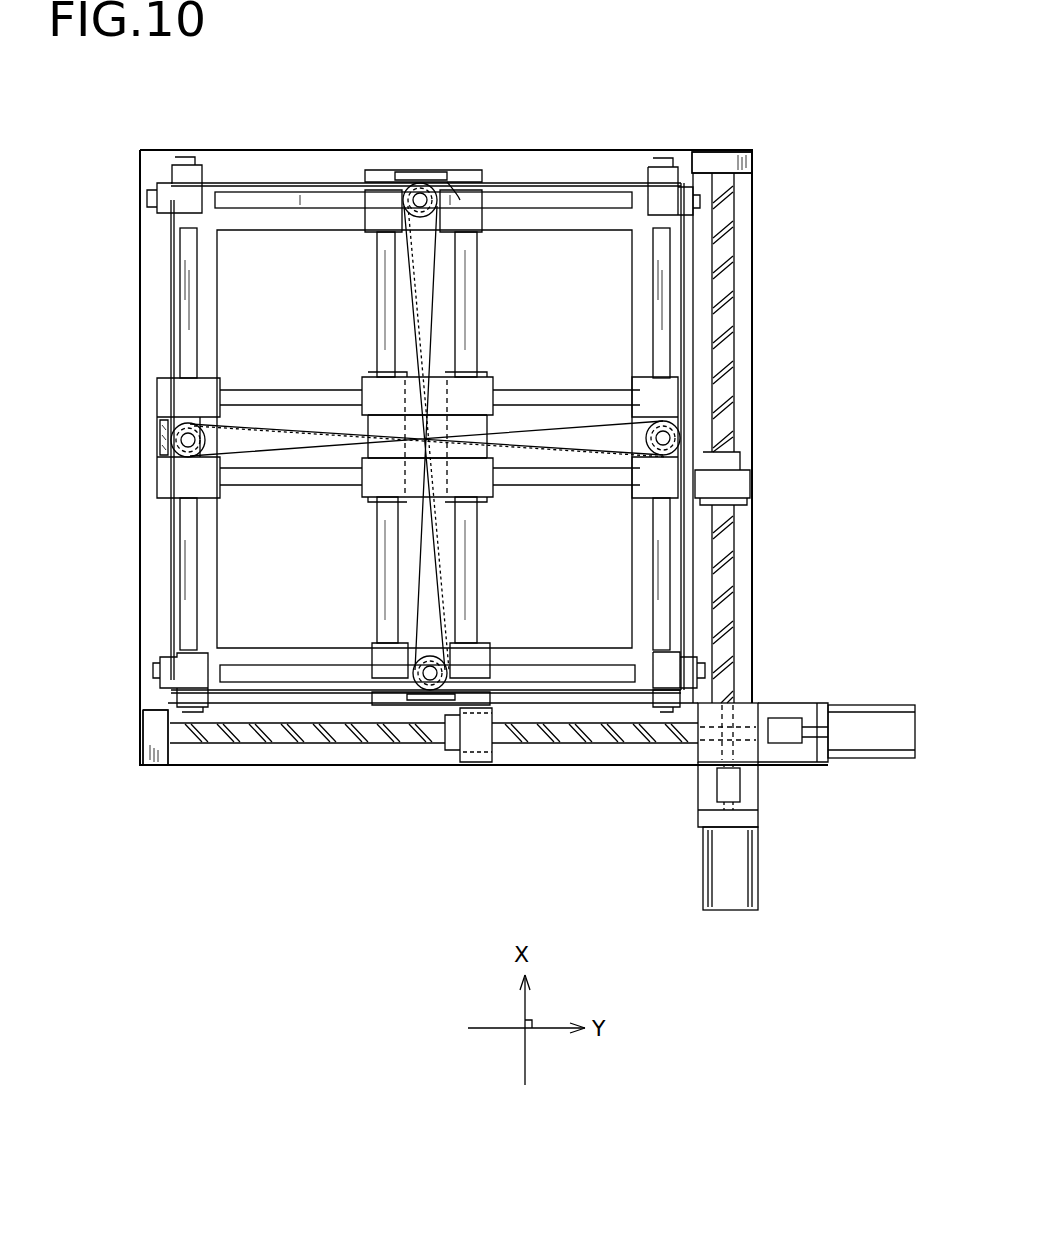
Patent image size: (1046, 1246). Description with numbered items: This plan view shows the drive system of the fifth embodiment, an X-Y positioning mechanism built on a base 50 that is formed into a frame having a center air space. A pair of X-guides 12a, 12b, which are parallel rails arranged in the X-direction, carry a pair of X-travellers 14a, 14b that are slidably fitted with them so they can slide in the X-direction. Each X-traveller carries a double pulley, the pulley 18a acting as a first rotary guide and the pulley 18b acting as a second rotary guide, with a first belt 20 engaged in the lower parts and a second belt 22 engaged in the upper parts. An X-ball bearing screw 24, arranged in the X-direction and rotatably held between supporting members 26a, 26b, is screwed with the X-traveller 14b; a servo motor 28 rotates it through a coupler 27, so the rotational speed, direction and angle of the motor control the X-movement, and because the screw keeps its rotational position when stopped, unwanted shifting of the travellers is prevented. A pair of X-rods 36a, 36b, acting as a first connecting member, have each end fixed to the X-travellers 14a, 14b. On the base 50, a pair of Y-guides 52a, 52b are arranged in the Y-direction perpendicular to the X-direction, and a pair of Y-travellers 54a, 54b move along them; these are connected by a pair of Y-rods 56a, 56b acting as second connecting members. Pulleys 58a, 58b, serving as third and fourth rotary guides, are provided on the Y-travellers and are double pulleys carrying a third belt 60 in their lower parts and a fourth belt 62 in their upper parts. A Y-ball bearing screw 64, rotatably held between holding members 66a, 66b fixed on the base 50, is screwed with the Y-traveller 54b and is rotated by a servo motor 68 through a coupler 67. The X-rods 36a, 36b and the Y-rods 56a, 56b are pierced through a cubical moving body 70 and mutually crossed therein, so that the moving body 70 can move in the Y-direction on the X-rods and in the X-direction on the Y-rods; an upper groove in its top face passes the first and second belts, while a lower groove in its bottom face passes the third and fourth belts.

The base 50 is at (148, 250).
The X-guide 12a is at (185, 302).
The X-guide 12b is at (665, 300).
The X-traveller 14a is at (160, 413).
The X-traveller 14b is at (735, 482).
The pulley 18a is at (185, 447).
The pulley 18b is at (670, 412).
The first belt 20 is at (572, 415).
The second belt 22 is at (712, 503).
The X-ball bearing screw 24 is at (728, 578).
The supporting member 26a is at (745, 165).
The supporting member 26b is at (753, 790).
The coupler 27 is at (720, 790).
The servo motor 28 is at (732, 898).
The X-rod 36a is at (262, 385).
The X-rod 36b is at (285, 490).
The Y-guide 52a is at (305, 190).
The Y-guide 52b is at (280, 675).
The Y-traveller 54a is at (380, 172).
The Y-traveller 54b is at (475, 740).
The Y-rod 56a is at (377, 307).
The Y-rod 56b is at (445, 655).
The pulley 58a is at (497, 305).
The pulley 58b is at (397, 693).
The third belt 60 is at (348, 700).
The fourth belt 62 is at (533, 690).
The Y-ball bearing screw 64 is at (575, 740).
The holding member 66a is at (158, 752).
The holding member 66b is at (787, 745).
The coupler 67 is at (812, 757).
The servo motor 68 is at (878, 745).
The moving body 70 is at (470, 390).